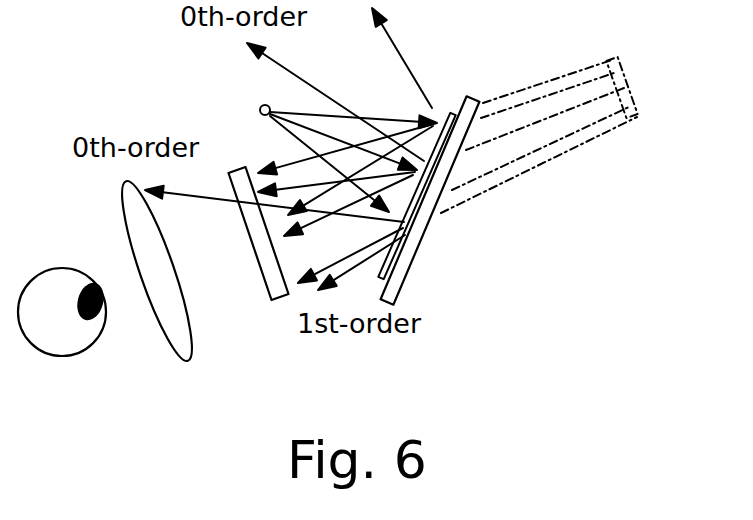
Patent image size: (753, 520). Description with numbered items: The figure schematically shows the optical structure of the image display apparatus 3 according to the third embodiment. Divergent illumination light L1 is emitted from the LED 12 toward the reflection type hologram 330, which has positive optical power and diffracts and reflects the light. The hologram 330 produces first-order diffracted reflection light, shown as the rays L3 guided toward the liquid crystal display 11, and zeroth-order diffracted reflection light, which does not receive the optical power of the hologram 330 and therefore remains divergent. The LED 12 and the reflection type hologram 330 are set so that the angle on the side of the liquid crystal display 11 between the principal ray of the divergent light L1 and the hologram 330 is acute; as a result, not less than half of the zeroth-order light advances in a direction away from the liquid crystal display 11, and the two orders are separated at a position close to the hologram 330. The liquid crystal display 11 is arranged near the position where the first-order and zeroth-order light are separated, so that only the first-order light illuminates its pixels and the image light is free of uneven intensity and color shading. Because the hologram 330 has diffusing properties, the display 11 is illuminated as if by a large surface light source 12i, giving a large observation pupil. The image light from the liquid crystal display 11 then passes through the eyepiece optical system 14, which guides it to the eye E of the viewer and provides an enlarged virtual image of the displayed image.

The LED 12 is at (261, 106).
The reflection type hologram 330 is at (468, 97).
The large surface light source 12i is at (637, 117).
The liquid crystal display 11 is at (279, 300).
The eyepiece optical system 14 is at (186, 348).
The image display apparatus 3 is at (543, 199).
The eye E is at (63, 345).
The illumination light L1 is at (353, 151).
The first-order diffracted light L3 is at (351, 259).